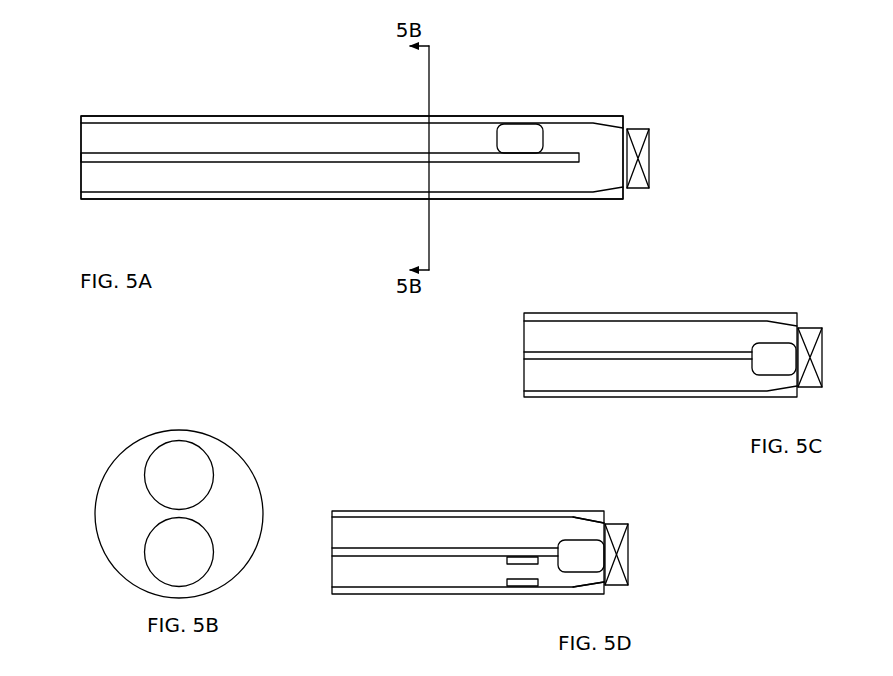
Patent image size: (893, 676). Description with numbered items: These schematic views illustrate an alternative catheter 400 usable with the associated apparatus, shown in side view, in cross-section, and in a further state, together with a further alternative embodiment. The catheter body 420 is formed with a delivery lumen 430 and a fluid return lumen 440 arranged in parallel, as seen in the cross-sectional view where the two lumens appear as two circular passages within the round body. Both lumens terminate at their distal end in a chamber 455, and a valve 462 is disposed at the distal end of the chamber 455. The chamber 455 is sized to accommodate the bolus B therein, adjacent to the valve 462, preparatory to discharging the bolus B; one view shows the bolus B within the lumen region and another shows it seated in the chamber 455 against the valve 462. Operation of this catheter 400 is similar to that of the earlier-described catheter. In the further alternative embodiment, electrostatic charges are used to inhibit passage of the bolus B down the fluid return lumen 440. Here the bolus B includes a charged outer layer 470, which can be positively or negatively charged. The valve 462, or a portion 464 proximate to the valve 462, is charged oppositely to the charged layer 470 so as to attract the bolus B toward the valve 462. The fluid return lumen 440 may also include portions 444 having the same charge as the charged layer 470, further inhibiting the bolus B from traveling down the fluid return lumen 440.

In FIG. 5A, the catheter 400 is at (77, 50).
In FIG. 5A, the catheter body 420 is at (155, 116).
In FIG. 5B, the catheter body 420 is at (179, 514).
In FIG. 5C, the catheter body 420 is at (555, 313).
In FIG. 5D, the catheter body 420 is at (363, 511).
In FIG. 5A, the delivery lumen 430 is at (277, 138).
In FIG. 5B, the delivery lumen 430 is at (178, 477).
In FIG. 5C, the delivery lumen 430 is at (648, 336).
In FIG. 5D, the delivery lumen 430 is at (457, 533).
In FIG. 5A, the fluid return lumen 440 is at (277, 175).
In FIG. 5B, the fluid return lumen 440 is at (178, 552).
In FIG. 5C, the fluid return lumen 440 is at (652, 367).
In FIG. 5D, the fluid return lumen 440 is at (458, 570).
In FIG. 5D, the portions 444 is at (523, 583).
In FIG. 5A, the chamber 455 is at (595, 153).
In FIG. 5C, the chamber 455 is at (775, 333).
In FIG. 5D, the chamber 455 is at (583, 532).
In FIG. 5A, the valve 462 is at (638, 129).
In FIG. 5C, the valve 462 is at (810, 328).
In FIG. 5D, the valve 462 is at (630, 539).
In FIG. 5D, the portion 464 is at (607, 577).
In FIG. 5D, the charged outer layer 470 is at (587, 540).